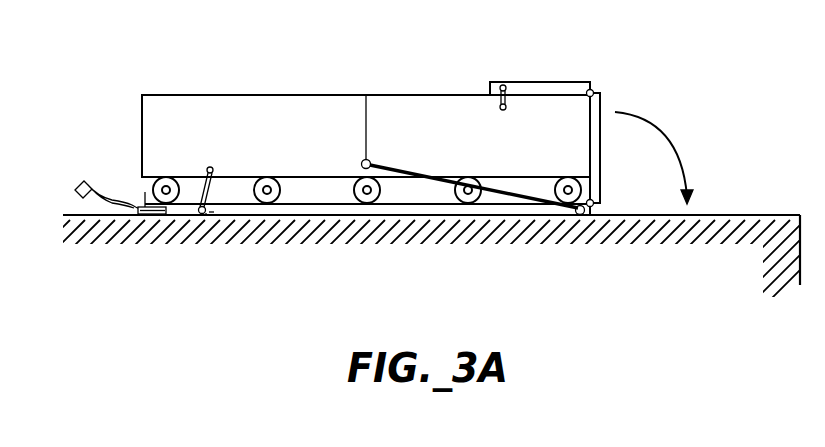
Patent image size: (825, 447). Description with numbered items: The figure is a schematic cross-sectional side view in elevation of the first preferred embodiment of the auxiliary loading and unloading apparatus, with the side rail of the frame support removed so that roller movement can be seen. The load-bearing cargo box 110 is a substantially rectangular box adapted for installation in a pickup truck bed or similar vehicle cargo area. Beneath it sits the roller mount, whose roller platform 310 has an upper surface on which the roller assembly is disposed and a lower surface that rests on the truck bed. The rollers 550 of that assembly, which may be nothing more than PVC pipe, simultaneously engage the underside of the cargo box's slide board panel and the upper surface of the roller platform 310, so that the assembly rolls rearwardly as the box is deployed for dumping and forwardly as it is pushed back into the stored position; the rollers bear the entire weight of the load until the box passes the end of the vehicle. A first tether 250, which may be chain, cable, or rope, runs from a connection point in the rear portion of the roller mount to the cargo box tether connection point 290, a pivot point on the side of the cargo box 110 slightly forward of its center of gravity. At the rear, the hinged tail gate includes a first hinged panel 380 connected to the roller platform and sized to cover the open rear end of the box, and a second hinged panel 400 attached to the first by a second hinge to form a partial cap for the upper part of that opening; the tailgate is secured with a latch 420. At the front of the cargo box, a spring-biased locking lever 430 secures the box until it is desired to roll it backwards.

The cargo box 110 is at (300, 95).
The first tether 250 is at (513, 200).
The cargo box tether connection point 290 is at (366, 95).
The roller platform 310 is at (212, 218).
The first hinged panel 380 is at (598, 108).
The second hinged panel 400 is at (565, 87).
The latch 420 is at (497, 108).
The spring-biased locking lever 430 is at (205, 188).
The rollers 550 is at (447, 205).